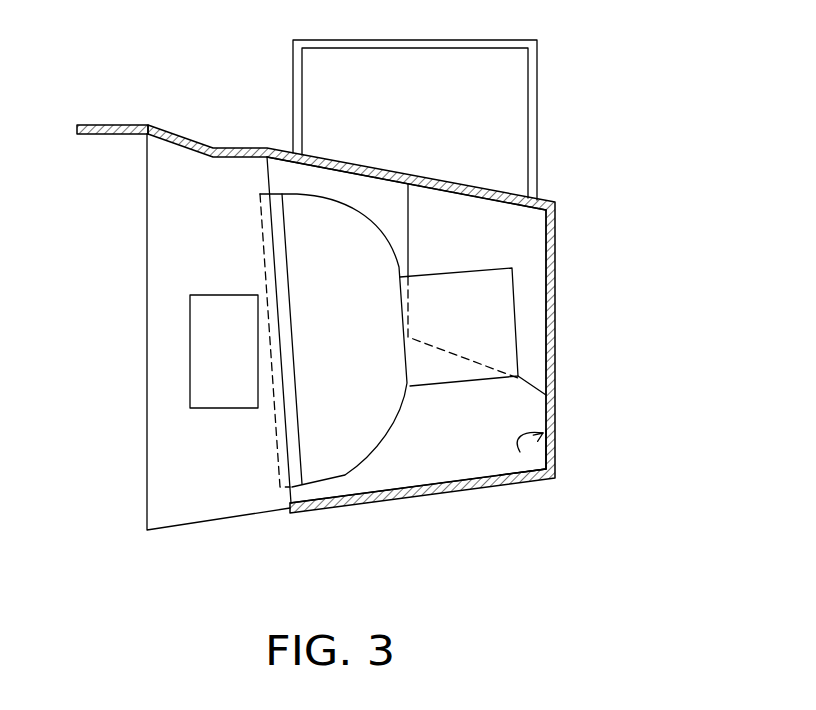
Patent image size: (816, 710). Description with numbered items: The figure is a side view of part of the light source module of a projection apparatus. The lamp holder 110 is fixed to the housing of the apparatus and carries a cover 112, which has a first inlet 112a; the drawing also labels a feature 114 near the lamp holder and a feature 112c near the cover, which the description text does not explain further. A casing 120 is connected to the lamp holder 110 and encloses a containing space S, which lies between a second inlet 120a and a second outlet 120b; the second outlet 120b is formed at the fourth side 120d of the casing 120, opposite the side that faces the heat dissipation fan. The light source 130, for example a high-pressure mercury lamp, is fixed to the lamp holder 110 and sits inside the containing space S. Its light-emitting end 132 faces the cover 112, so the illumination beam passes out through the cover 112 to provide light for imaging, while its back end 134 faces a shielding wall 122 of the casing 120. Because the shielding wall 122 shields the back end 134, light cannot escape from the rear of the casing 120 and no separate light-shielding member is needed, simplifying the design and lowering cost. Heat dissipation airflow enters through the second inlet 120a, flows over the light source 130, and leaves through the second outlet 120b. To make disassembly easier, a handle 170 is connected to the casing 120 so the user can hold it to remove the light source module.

The lamp holder 110 is at (351, 308).
The cover 112 is at (178, 355).
The first inlet 112a is at (200, 335).
The side wall of back plate 112c is at (246, 465).
The flange of back plate 114 is at (108, 125).
The casing 120 is at (392, 351).
The second inlet 120a is at (531, 473).
The second outlet 120b is at (411, 217).
The fourth side 120d is at (457, 462).
The shielding wall 122 is at (553, 343).
The light source 130 is at (337, 447).
The light-emitting end 132 is at (253, 236).
The back end 134 is at (515, 284).
The handle 170 is at (537, 90).
The containing space S is at (438, 403).